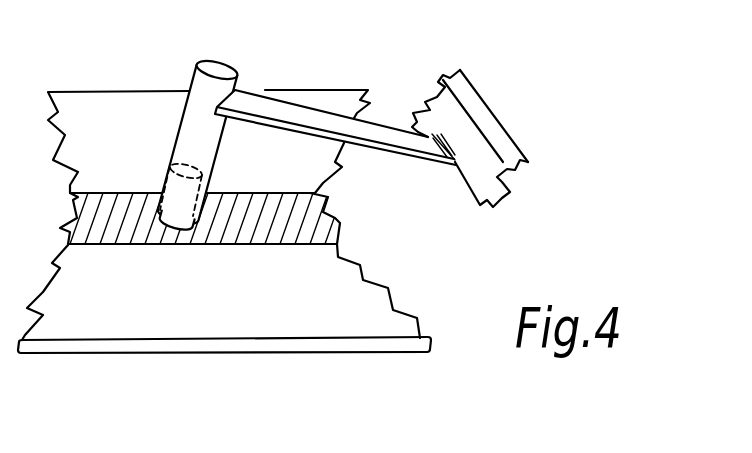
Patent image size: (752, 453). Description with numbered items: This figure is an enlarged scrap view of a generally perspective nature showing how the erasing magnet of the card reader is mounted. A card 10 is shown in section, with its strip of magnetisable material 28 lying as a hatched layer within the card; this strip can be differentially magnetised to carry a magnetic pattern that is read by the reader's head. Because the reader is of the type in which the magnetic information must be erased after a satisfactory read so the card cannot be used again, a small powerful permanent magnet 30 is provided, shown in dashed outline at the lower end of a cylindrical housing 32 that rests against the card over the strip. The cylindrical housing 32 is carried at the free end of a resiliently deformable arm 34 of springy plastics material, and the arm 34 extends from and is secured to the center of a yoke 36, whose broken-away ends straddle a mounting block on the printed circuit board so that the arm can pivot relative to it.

The card 10 is at (287, 333).
The strip of magnetisable material 28 is at (113, 227).
The permanent magnet 30 is at (160, 190).
The cylindrical housing 32 is at (192, 125).
The resiliently deformable arm 34 is at (312, 122).
The yoke 36 is at (482, 103).